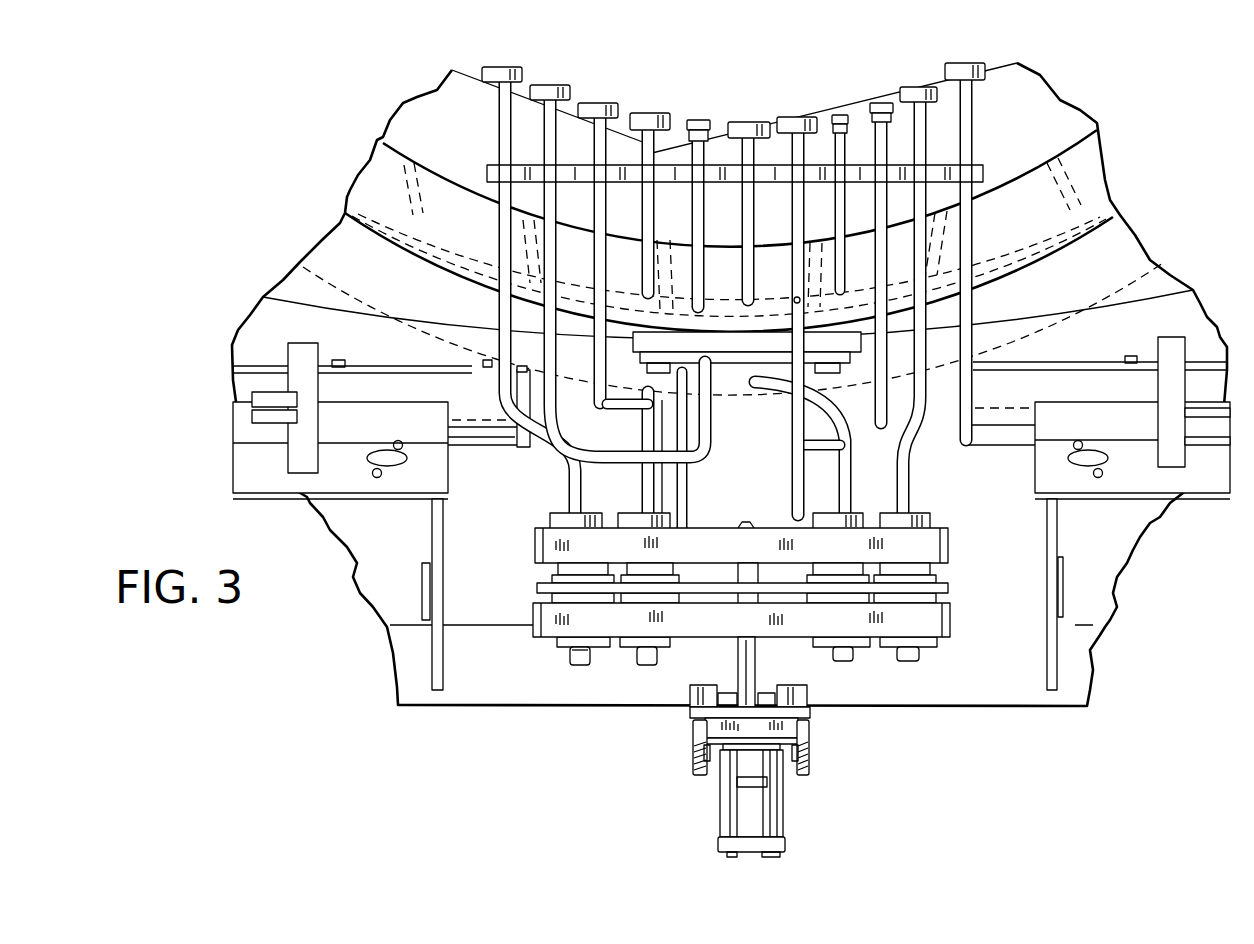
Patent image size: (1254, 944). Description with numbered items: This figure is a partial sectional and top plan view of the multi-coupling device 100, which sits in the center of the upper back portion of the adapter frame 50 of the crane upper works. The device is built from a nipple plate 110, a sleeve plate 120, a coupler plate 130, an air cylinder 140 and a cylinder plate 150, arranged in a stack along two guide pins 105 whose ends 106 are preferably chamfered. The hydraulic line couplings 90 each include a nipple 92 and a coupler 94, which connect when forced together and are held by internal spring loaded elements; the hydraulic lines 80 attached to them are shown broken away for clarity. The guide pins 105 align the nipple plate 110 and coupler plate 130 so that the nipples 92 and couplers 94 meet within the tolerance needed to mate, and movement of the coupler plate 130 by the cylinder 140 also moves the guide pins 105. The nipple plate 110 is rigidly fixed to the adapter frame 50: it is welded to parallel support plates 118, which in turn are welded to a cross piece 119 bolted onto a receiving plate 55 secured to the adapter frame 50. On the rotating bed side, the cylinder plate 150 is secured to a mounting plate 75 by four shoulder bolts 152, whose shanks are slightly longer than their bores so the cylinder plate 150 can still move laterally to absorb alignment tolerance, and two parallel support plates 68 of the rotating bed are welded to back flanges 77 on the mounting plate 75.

The adapter frame 50 is at (1027, 713).
The receiving plate 55 is at (727, 340).
The parallel support plates 68 is at (700, 765).
The mounting plate 75 is at (703, 727).
The back flanges 77 is at (710, 768).
The hydraulic lines 80 is at (745, 157).
The hydraulic line couplings 90 is at (937, 500).
The nipple 92 is at (562, 513).
The coupler 94 is at (585, 665).
The multi-coupling device 100 is at (915, 685).
The guide pins 105 is at (757, 652).
The ends of guide pins 106 is at (745, 522).
The nipple plate 110 is at (935, 548).
The parallel support plates 118 is at (797, 482).
The cross piece 119 is at (727, 365).
The sleeve plate 120 is at (945, 590).
The coupler plate 130 is at (950, 620).
The air cylinder 140 is at (757, 817).
The cylinder plate 150 is at (812, 713).
The shoulder bolts 152 is at (690, 688).